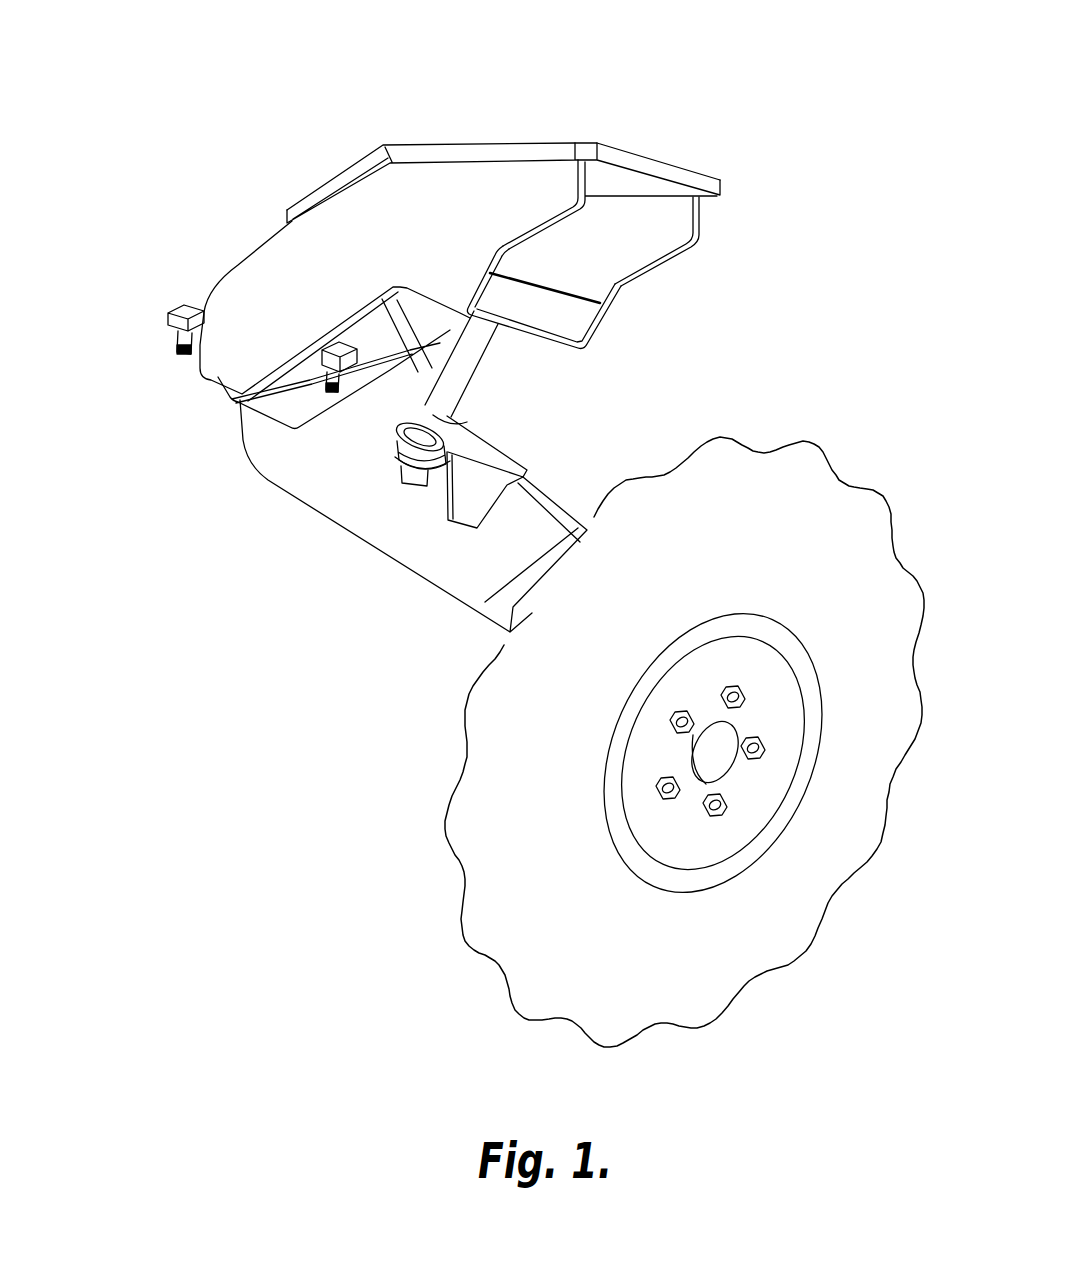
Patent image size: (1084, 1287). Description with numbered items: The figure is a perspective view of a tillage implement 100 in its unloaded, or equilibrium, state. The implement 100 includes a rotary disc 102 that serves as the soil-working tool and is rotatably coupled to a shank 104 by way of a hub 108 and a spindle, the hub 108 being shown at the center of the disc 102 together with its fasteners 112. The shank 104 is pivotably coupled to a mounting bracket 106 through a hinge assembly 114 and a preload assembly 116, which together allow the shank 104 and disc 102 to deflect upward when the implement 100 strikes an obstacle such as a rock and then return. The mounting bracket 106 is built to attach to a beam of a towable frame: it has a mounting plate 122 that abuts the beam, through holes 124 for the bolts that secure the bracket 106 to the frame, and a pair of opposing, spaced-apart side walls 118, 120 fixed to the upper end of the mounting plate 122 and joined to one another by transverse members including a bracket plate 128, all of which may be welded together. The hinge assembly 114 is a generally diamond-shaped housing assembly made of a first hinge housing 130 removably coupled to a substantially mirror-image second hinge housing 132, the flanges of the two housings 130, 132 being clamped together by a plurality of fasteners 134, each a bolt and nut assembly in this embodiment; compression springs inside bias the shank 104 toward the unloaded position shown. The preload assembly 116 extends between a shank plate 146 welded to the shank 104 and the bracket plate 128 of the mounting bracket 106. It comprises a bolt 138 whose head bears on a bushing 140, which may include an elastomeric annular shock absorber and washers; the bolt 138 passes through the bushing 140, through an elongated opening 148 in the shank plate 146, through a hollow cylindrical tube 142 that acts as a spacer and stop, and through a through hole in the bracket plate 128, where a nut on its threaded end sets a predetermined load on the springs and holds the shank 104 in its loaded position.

The tillage implement 100 is at (275, 104).
The rotary disc 102 is at (849, 813).
The shank 104 is at (313, 490).
The mounting bracket 106 is at (503, 134).
The hub 108 is at (722, 746).
The fasteners 112 is at (682, 826).
The hinge assembly 114 is at (148, 317).
The preload assembly 116 is at (650, 370).
The side wall 118 is at (667, 216).
The side wall 120 is at (543, 190).
The mounting plate 122 is at (413, 150).
The through holes 124 is at (590, 177).
The bracket plate 128 is at (577, 313).
The first hinge housing 130 is at (200, 310).
The second hinge housing 132 is at (217, 391).
The fasteners 134 is at (331, 370).
The bolt 138 is at (417, 470).
The bushing 140 is at (416, 443).
The tube 142 is at (472, 353).
The shank plate 146 is at (463, 510).
The elongated opening 148 is at (457, 436).